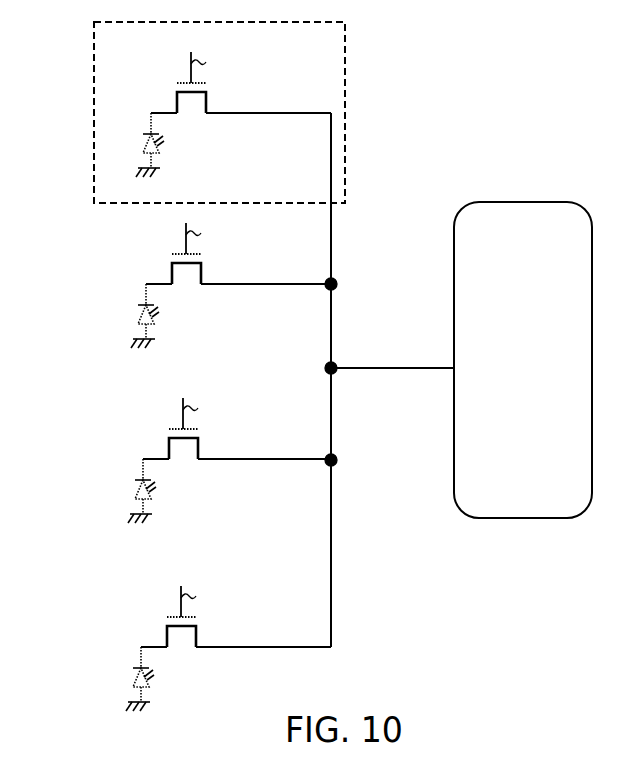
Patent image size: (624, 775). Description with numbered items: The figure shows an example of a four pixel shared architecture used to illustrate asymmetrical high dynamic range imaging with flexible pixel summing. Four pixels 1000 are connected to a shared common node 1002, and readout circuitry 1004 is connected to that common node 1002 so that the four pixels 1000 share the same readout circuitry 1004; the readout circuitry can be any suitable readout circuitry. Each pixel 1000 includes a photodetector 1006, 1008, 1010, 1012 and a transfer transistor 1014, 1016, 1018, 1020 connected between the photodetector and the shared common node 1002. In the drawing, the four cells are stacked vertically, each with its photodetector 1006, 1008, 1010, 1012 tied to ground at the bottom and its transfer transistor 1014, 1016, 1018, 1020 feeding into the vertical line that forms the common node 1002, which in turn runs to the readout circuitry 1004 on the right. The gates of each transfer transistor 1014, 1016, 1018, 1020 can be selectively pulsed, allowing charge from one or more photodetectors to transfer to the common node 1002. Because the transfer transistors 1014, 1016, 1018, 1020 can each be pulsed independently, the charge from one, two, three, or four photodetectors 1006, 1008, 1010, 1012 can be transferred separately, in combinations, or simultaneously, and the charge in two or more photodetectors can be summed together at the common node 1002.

The pixel 1000 is at (93, 168).
The shared common node 1002 is at (334, 372).
The readout circuitry 1004 is at (549, 342).
The photodetector 1006 is at (176, 145).
The photodetector 1008 is at (170, 316).
The photodetector 1010 is at (169, 491).
The photodetector 1012 is at (167, 679).
The transfer transistor 1014 is at (217, 82).
The transfer transistor 1016 is at (212, 253).
The transfer transistor 1018 is at (210, 428).
The transfer transistor 1020 is at (207, 616).